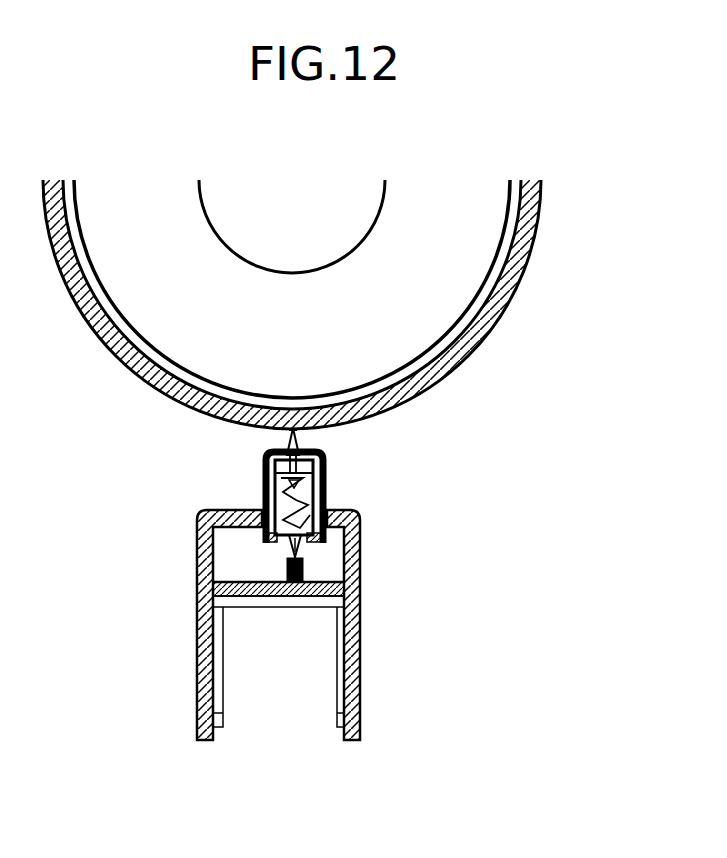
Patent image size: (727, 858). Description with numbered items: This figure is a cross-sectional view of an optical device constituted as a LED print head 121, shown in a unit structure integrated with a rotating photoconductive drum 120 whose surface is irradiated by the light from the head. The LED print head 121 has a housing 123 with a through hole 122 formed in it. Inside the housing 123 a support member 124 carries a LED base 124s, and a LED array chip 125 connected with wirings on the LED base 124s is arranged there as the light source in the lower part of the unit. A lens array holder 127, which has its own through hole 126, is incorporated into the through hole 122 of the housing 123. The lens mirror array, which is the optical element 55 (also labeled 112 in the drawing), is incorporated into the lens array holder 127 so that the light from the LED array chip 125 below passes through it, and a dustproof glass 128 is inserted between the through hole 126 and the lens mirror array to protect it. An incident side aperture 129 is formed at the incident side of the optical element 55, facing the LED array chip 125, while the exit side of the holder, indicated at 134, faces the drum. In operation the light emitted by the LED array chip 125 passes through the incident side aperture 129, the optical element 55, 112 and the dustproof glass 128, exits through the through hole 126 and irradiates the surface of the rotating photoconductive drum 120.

The photoconductive drum 120 is at (477, 340).
The LED print head 121 is at (607, 643).
The through hole 122 is at (261, 509).
The housing 123 is at (360, 702).
The support member 124 is at (352, 600).
The LED base 124s is at (345, 583).
The LED array chip 125 is at (305, 560).
The through hole 126 is at (303, 442).
The lens array holder 127 is at (262, 482).
The dustproof glass 128 is at (276, 472).
The incident side aperture 129 is at (262, 533).
The upper nozzle 134 is at (272, 455).
The liquid 112 is at (189, 518).
The optical element 55 is at (280, 492).